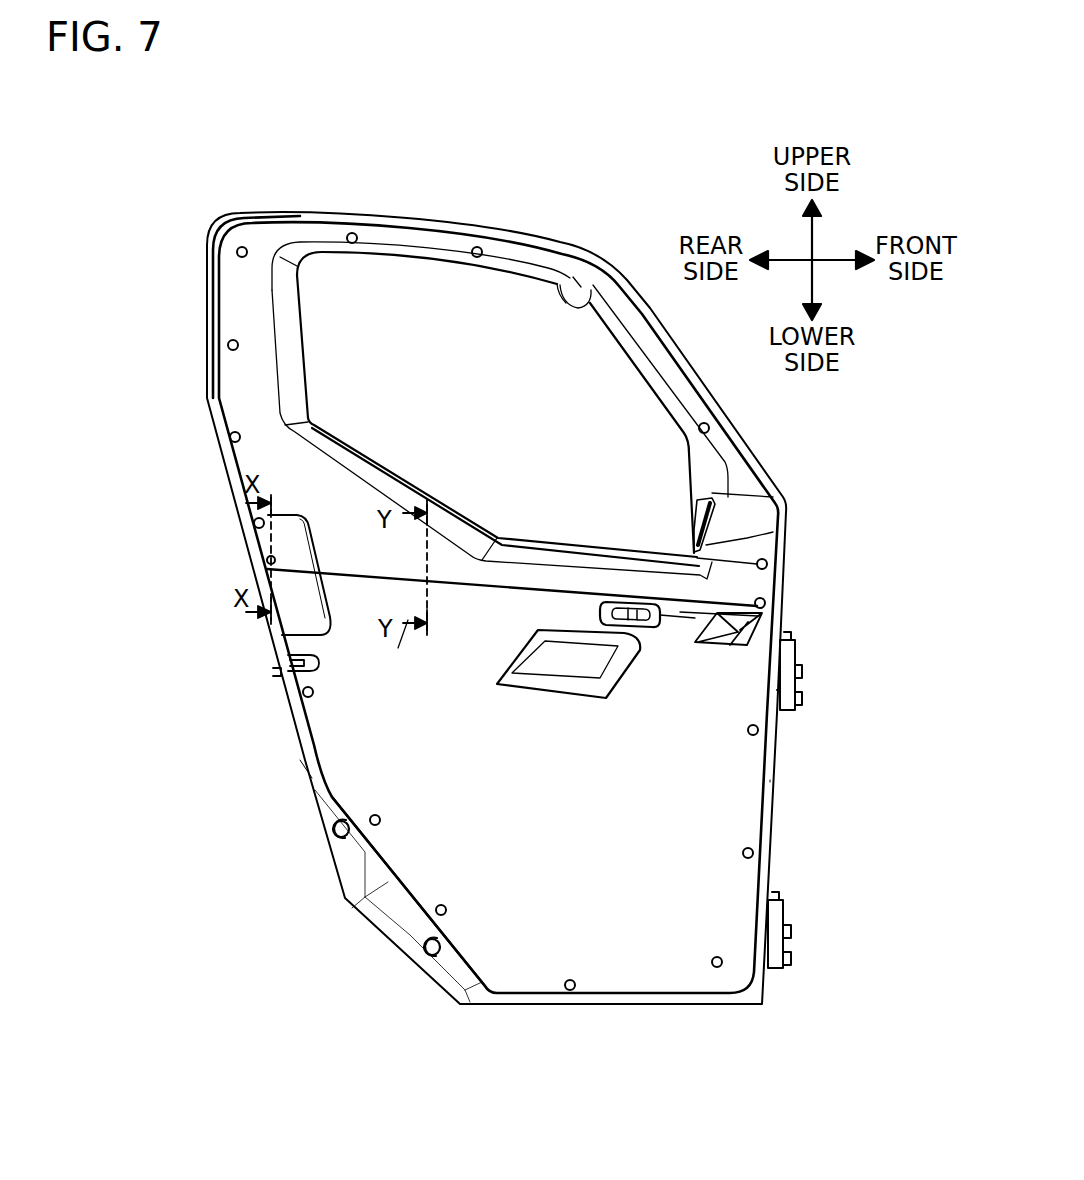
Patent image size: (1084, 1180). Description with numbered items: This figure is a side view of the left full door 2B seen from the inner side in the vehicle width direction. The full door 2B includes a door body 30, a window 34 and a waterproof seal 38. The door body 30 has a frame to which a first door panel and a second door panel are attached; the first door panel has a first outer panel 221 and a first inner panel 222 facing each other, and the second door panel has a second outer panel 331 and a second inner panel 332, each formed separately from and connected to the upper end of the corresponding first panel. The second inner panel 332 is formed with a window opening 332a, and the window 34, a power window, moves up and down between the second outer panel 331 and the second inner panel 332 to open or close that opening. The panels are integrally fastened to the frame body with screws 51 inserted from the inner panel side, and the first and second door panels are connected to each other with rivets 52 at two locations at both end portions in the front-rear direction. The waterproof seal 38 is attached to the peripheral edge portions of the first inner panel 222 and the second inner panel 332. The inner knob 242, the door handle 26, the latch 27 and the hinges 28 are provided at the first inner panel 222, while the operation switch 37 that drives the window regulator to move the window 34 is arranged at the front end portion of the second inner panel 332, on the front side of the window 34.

The full door 2B is at (667, 180).
The door body 30 is at (207, 266).
The second outer panel 331 is at (220, 220).
The second inner panel 332 is at (257, 460).
The window opening 332a is at (572, 292).
The window 34 is at (340, 310).
The operation switch 37 is at (712, 511).
The waterproof seal 38 is at (768, 775).
The door handle 26 is at (557, 690).
The latch 27 is at (305, 663).
The hinges 28 is at (795, 658).
The screws 51 is at (353, 232).
The rivets 52 is at (265, 569).
The first outer panel 221 is at (345, 850).
The first inner panel 222 is at (345, 733).
The inner knob 242 is at (760, 630).